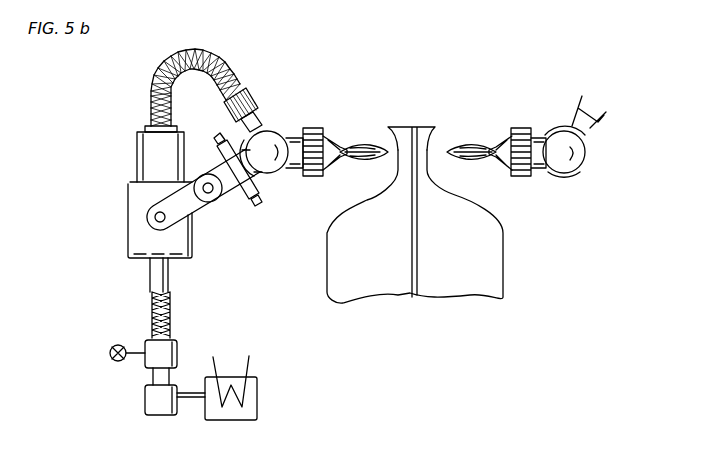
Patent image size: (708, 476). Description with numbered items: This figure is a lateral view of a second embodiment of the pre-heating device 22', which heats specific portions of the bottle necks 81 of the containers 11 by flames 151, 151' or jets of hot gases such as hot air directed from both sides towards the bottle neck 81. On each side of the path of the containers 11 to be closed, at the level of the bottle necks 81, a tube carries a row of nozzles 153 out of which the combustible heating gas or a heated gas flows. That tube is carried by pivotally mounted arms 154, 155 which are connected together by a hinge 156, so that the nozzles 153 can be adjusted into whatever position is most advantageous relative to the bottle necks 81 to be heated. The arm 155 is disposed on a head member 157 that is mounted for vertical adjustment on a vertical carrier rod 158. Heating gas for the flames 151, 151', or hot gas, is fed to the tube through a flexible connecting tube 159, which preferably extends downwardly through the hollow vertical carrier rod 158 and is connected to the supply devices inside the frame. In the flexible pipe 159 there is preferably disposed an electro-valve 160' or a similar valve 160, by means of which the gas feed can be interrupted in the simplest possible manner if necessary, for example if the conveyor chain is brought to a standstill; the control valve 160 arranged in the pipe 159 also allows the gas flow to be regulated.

The container 11 is at (337, 276).
The bottle neck 81 is at (420, 135).
The heating device 22' is at (243, 181).
The flame 151 is at (364, 130).
The flame 151' is at (471, 130).
The nozzle 153 is at (330, 178).
The arm 154 is at (228, 185).
The arm 155 is at (160, 203).
The hinge 156 is at (208, 190).
The head member 157 is at (140, 232).
The vertical carrier rod 158 is at (150, 278).
The flexible connecting tube 159 is at (152, 90).
The valve 160 is at (169, 351).
The electro-valve 160' is at (177, 393).